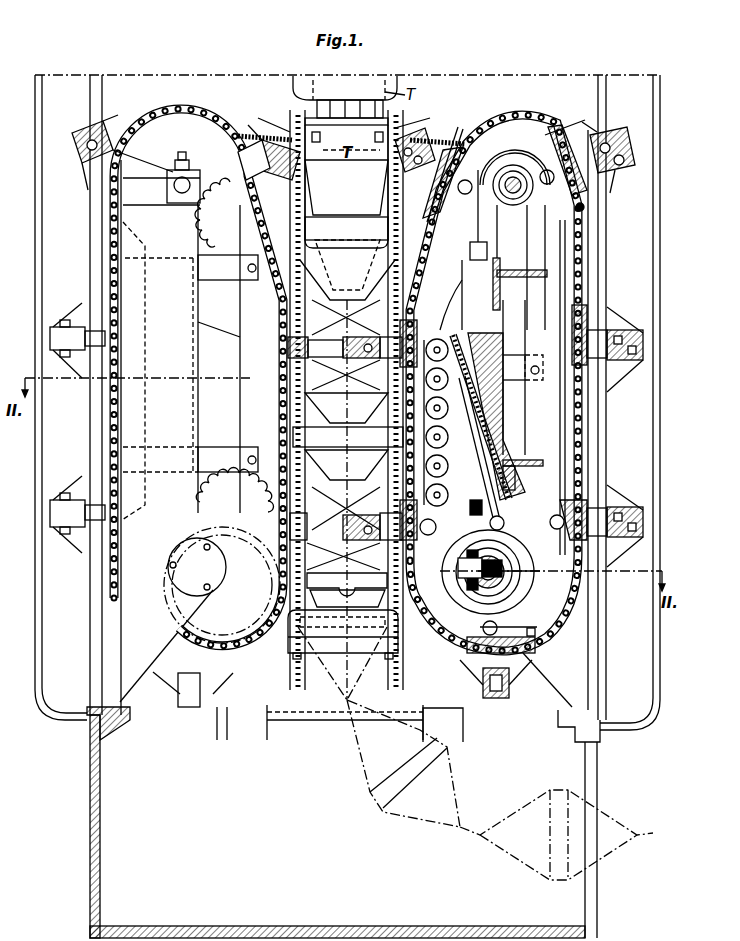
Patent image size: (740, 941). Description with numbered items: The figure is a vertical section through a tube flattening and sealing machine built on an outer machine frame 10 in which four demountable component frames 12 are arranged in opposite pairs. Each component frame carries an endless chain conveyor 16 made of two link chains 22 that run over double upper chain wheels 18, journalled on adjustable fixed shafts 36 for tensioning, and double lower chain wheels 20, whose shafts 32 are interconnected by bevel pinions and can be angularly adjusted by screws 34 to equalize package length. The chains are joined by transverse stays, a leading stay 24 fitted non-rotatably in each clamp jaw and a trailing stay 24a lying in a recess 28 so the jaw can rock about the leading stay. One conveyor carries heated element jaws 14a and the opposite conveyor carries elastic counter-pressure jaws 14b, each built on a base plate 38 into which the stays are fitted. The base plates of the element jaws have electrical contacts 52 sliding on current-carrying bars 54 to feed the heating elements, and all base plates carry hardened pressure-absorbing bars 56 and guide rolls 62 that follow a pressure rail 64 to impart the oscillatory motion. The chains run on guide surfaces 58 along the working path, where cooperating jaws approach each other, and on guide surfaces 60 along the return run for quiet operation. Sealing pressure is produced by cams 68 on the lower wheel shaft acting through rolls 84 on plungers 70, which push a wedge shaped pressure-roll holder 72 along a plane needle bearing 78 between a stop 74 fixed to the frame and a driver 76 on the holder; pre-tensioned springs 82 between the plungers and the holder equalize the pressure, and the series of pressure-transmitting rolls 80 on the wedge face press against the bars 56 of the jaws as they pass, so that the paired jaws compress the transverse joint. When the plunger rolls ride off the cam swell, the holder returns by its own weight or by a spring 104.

The outer machine frame 10 is at (90, 800).
The component frame 12 is at (133, 683).
The element jaw 14a is at (622, 486).
The counter-pressure jaw 14b is at (63, 333).
The endless chain conveyor 16 is at (518, 120).
The upper chain wheel 18 is at (183, 140).
The lower chain wheel 20 is at (255, 648).
The link chain 22 is at (110, 250).
The leading stay 24 is at (560, 128).
The trailing stay 24a is at (585, 207).
The recess 28 is at (572, 198).
The shaft 32 is at (512, 585).
The screw 34 is at (462, 557).
The fixed shaft 36 is at (188, 178).
The base plate 38 is at (548, 152).
The electrical contact 52 is at (599, 309).
The current-carrying bar 54 is at (566, 408).
The pressure-absorbing bar 56 is at (450, 217).
The guide surface 58 is at (252, 375).
The guide surface 60 is at (133, 319).
The guide roll 62 is at (460, 135).
The pressure rail 64 is at (474, 205).
The cam 68 is at (530, 573).
The plunger 70 is at (497, 517).
The pressure-roll holder 72 is at (434, 525).
The stop 74 is at (516, 493).
The driver 76 is at (465, 322).
The needle bearing 78 is at (500, 410).
The pressure-transmitting roll 80 is at (468, 277).
The pre-tensioned spring 82 is at (497, 357).
The roll 84 is at (551, 522).
The spring 104 is at (457, 338).